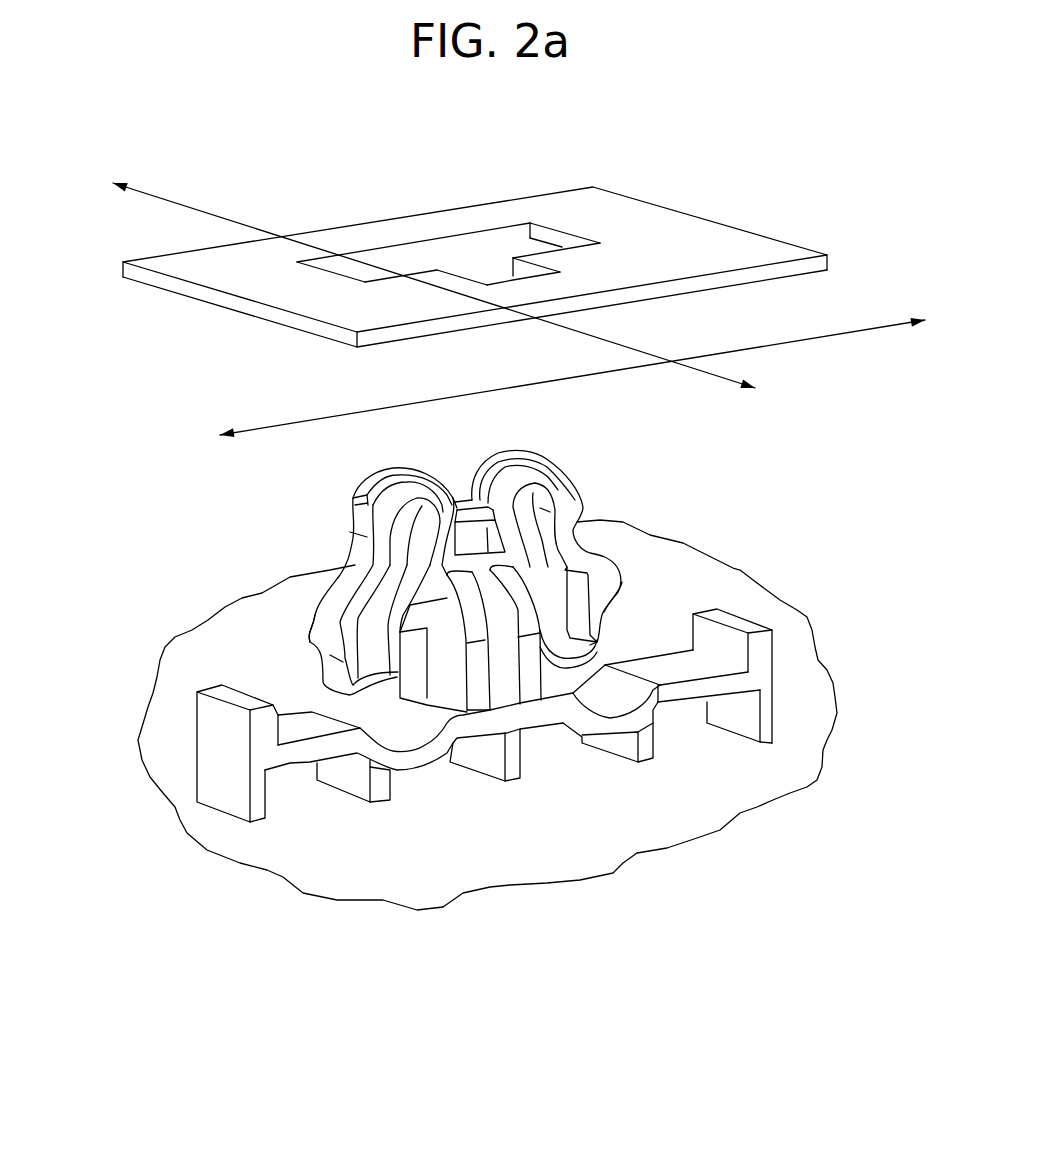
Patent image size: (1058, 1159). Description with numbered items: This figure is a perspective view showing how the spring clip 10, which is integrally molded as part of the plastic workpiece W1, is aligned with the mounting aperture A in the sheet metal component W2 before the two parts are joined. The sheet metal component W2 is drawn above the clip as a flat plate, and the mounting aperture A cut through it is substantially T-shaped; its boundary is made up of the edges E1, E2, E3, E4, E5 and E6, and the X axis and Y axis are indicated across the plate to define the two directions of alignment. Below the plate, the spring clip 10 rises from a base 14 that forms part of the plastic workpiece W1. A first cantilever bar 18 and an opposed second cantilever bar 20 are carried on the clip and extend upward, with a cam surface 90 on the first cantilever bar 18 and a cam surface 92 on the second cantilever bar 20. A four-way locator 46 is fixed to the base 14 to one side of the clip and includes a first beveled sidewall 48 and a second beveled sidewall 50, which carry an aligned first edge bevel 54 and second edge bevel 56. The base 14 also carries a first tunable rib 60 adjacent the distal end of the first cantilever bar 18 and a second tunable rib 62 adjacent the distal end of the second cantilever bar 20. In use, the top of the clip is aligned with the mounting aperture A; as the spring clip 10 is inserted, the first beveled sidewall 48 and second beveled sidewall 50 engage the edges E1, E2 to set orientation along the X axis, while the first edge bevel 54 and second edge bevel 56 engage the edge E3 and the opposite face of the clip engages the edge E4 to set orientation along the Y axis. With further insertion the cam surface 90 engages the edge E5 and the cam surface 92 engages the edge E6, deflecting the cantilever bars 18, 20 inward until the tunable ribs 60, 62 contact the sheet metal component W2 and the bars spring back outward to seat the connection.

The spring clip 10 is at (703, 508).
The base 14 is at (491, 754).
The first cantilever bar 18 is at (387, 515).
The second cantilever bar 20 is at (563, 483).
The four-way locator 46 is at (495, 730).
The first beveled sidewall 48 is at (448, 685).
The second beveled sidewall 50 is at (533, 673).
The first edge bevel 54 is at (465, 600).
The second edge bevel 56 is at (522, 603).
The first tunable rib 60 is at (223, 693).
The second tunable rib 62 is at (742, 622).
The cam surface 90 is at (317, 627).
The cam surface 92 is at (620, 573).
The mounting aperture A is at (490, 257).
The edge of the aperture E1 is at (465, 273).
The edge of the aperture E2 is at (537, 267).
The edge of the aperture E3 is at (517, 278).
The edge of the aperture E4 is at (393, 253).
The edge of the aperture E5 is at (340, 272).
The edge of the aperture E6 is at (550, 238).
The plastic workpiece W1 is at (397, 887).
The sheet metal component W2 is at (737, 243).
The X axis X is at (413, 400).
The Y axis Y is at (170, 200).